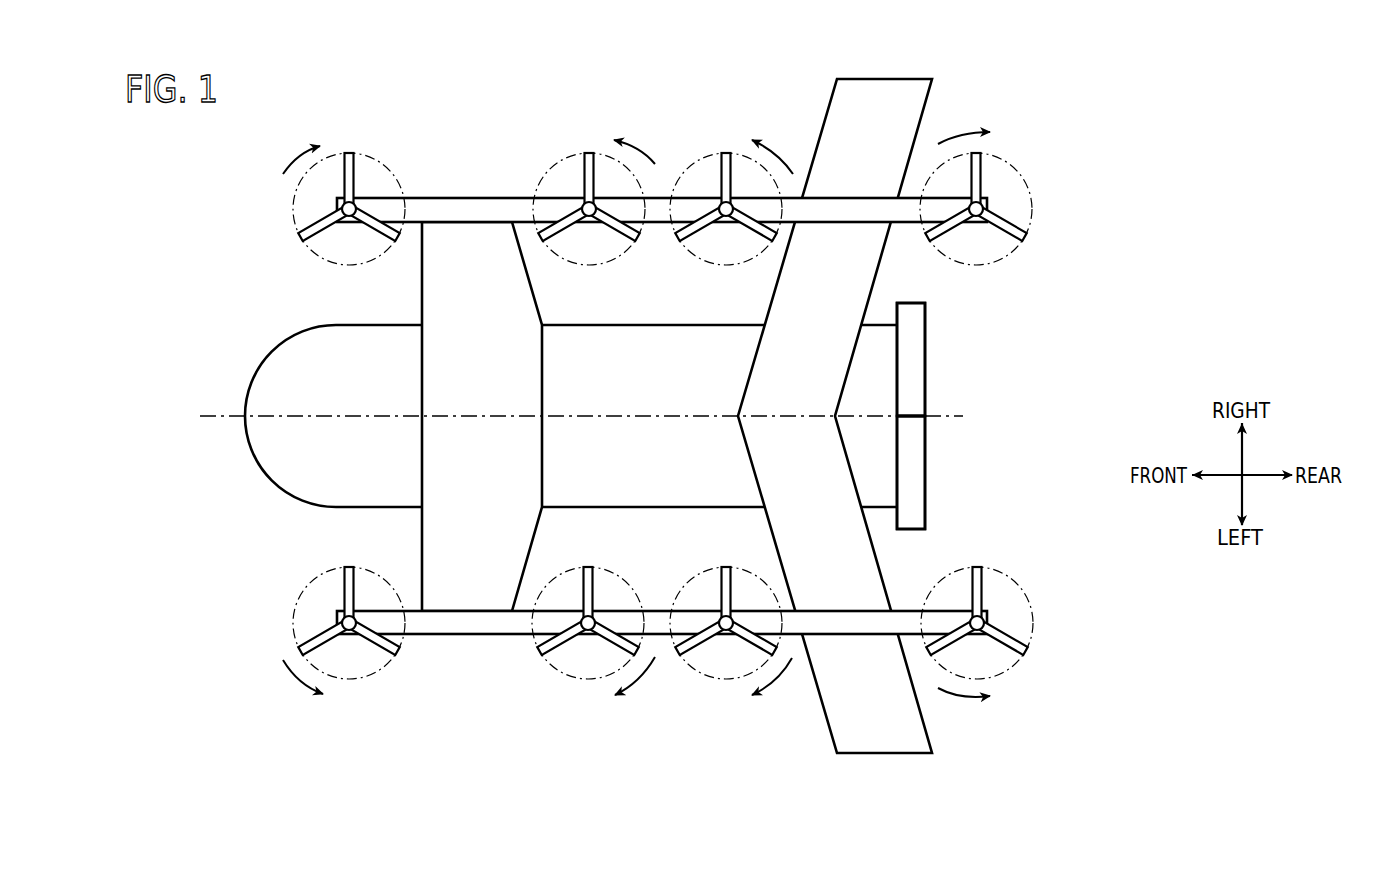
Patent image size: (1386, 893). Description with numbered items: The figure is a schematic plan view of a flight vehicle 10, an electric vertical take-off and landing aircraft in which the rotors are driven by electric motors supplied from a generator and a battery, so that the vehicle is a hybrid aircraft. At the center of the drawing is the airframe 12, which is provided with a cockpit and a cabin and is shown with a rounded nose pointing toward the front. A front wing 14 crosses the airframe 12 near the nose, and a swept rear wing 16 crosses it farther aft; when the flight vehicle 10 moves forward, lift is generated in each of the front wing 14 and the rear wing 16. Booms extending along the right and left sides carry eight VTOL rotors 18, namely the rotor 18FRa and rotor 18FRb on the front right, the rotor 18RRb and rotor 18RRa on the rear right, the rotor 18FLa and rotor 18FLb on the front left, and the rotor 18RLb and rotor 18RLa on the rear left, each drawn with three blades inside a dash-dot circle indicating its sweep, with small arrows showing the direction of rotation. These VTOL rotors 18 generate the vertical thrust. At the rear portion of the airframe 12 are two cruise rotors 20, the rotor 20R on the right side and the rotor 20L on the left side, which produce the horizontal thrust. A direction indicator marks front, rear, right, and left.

The flight vehicle 10 is at (166, 172).
The airframe 12 is at (250, 387).
The front wing 14 is at (456, 246).
The rear wing 16 is at (878, 79).
The VTOL rotors 18 is at (723, 417).
The rotor 18FRa is at (349, 153).
The rotor 18FRb is at (587, 153).
The rotor 18RRb is at (724, 153).
The rotor 18RRa is at (984, 165).
The rotor 18FLa is at (375, 645).
The rotor 18FLb is at (541, 645).
The rotor 18RLb is at (695, 645).
The rotor 18RLa is at (1015, 648).
The cruise rotors 20 is at (977, 416).
The rotor 20R is at (928, 362).
The rotor 20L is at (928, 468).